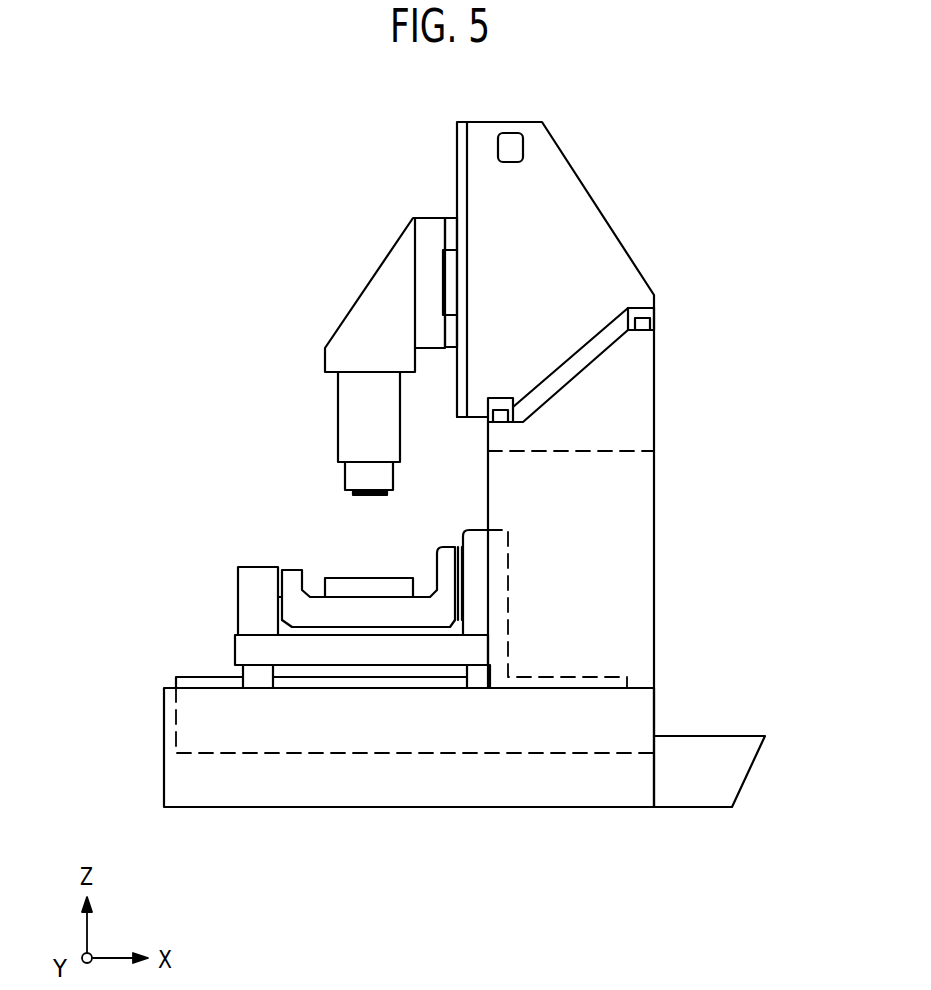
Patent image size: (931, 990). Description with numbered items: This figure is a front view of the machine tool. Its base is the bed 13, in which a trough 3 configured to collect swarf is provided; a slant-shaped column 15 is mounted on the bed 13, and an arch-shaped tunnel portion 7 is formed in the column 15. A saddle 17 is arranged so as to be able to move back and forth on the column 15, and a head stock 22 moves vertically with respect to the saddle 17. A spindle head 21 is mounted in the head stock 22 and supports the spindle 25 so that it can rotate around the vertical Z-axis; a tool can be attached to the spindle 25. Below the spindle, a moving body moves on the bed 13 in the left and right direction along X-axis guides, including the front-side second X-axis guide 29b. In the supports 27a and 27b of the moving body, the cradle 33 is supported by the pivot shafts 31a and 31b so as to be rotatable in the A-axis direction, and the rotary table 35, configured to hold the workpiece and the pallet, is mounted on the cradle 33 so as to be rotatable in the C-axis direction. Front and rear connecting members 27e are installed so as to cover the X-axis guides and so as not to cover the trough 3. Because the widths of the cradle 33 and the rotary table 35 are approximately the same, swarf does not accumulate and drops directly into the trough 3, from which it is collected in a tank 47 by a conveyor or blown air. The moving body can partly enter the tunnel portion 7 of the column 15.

The trough 3 is at (205, 750).
The arch-shaped tunnel portion 7 is at (588, 451).
The bed 13 is at (617, 777).
The slant-shaped column 15 is at (625, 562).
The saddle 17 is at (557, 252).
The spindle head 21 is at (357, 417).
The head stock 22 is at (367, 332).
The spindle 25 is at (357, 477).
The support 27a is at (260, 620).
The support 27b is at (477, 607).
The connecting member 27e is at (318, 652).
The second X-axis guide 29b is at (205, 678).
The pivot shaft 31a is at (282, 570).
The pivot shaft 31b is at (458, 545).
The cradle 33 is at (380, 610).
The rotary table 35 is at (347, 585).
The tank 47 is at (700, 757).